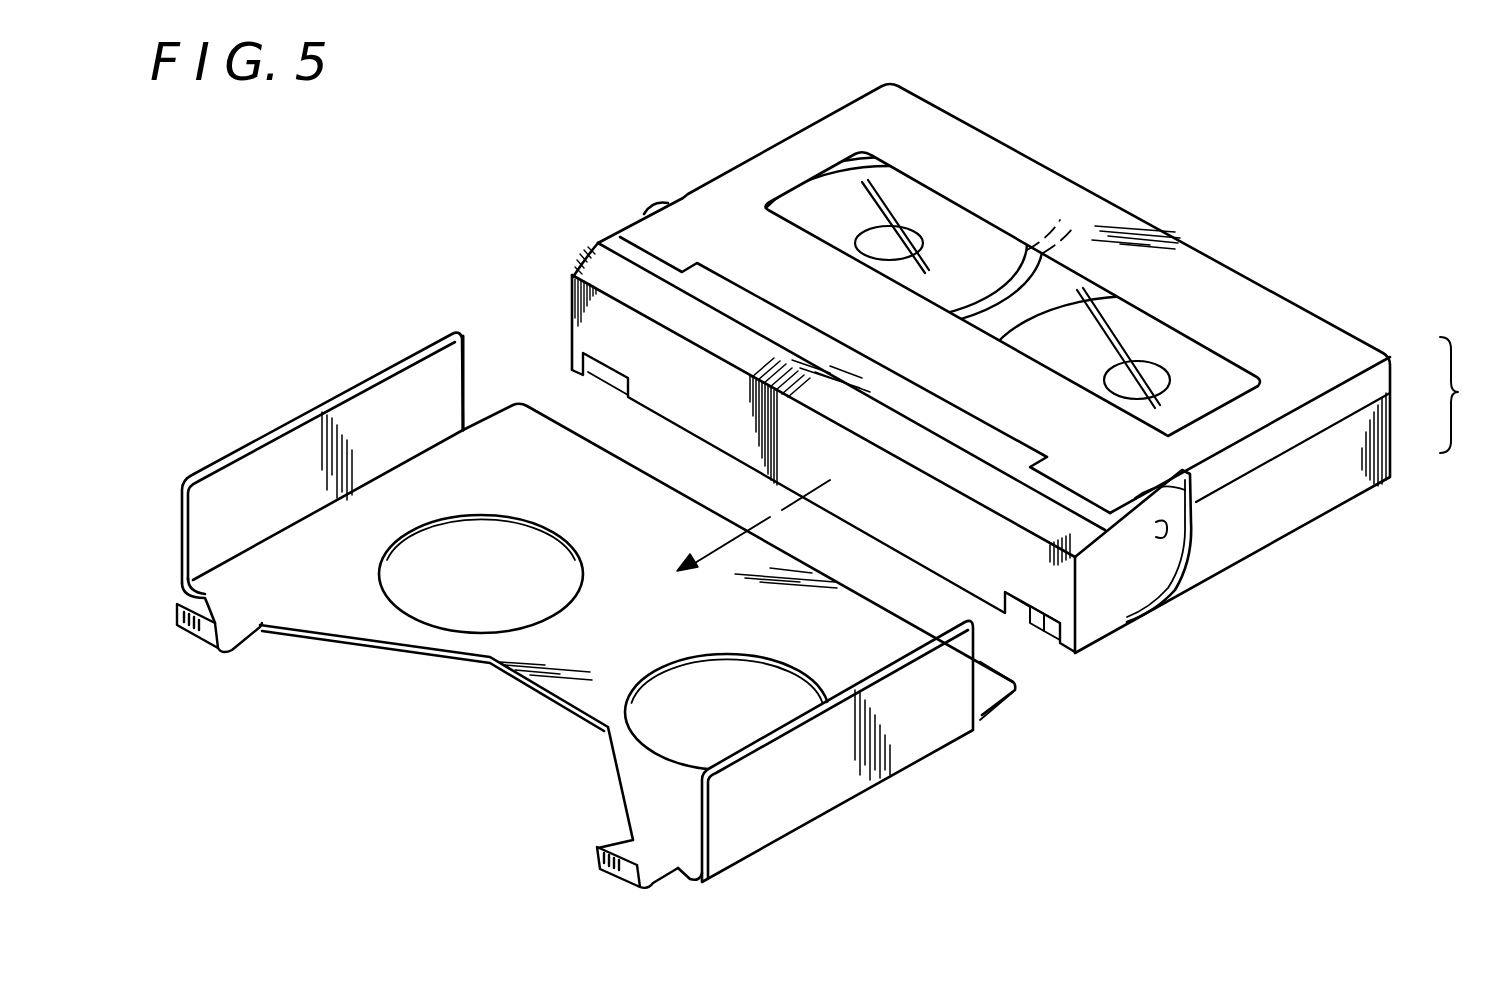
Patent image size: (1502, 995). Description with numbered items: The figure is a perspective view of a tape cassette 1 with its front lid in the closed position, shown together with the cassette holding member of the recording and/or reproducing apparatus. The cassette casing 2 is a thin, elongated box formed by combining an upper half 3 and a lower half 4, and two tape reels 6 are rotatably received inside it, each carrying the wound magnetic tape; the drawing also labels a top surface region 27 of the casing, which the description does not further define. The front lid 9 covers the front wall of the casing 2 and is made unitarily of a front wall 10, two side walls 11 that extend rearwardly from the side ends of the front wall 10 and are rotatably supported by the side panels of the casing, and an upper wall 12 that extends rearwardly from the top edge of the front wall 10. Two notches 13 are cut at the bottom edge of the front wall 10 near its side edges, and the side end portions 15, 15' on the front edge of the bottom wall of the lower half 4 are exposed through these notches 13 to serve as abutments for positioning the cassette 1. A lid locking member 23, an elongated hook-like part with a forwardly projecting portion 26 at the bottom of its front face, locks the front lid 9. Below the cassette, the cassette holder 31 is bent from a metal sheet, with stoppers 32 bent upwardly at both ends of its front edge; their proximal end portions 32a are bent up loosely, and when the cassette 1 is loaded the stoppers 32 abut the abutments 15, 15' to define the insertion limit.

The tape cassette 1 is at (1017, 145).
The cassette casing 2 is at (1456, 395).
The upper half 3 is at (1392, 380).
The lower half 4 is at (1382, 452).
The tape reel 6 is at (1040, 255).
The front lid 9 is at (572, 266).
The front wall 10 is at (593, 328).
The side wall 11 is at (652, 213).
The upper wall 12 is at (922, 402).
The notch 13 is at (583, 376).
The side end portion (abutment) 15 is at (1069, 674).
The side end portion (abutment) 15' is at (614, 408).
The lid locking member 23 is at (1030, 606).
The forwardly projecting portion 26 is at (1033, 634).
The top surface of housing 27 is at (788, 146).
The cassette holder 31 is at (379, 368).
The stopper 32 is at (203, 632).
The proximal end portion 32a is at (230, 630).